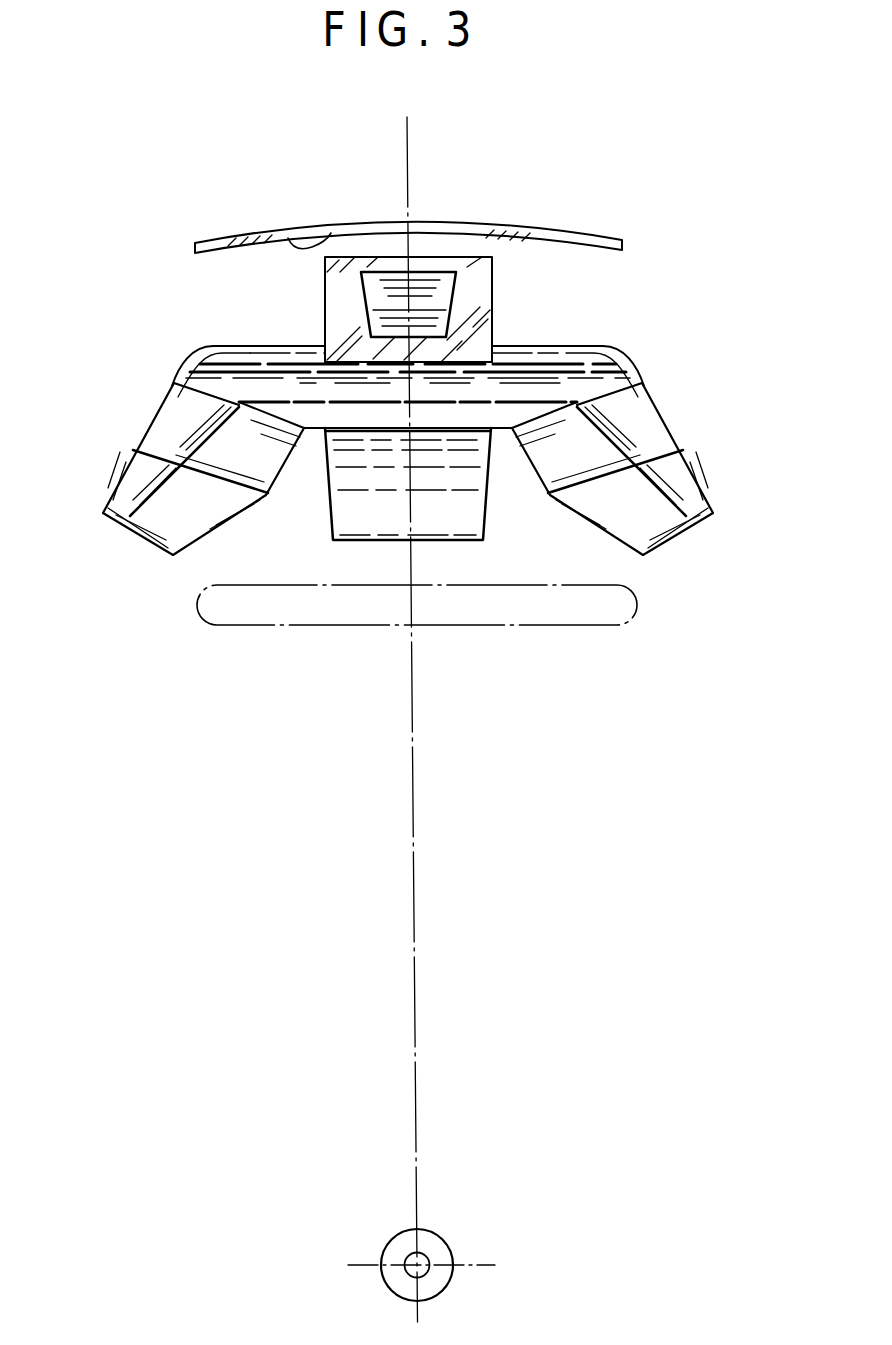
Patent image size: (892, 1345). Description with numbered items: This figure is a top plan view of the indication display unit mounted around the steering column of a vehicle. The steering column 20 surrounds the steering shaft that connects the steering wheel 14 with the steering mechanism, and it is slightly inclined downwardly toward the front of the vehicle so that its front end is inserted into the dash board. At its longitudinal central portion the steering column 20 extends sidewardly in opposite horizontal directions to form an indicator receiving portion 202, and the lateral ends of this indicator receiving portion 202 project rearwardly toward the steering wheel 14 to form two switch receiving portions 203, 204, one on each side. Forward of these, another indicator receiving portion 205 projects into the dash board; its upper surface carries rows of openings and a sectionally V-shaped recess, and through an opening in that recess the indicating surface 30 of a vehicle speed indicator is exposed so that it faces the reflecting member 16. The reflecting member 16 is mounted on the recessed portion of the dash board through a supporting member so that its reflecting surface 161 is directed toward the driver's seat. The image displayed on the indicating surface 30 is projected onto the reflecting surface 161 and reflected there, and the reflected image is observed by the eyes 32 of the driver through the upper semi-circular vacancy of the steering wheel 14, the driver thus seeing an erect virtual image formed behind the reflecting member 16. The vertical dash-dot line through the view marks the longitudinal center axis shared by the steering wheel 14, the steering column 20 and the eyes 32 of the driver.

The steering wheel 14 is at (268, 620).
The reflecting member 16 is at (246, 236).
The reflecting surface 161 is at (313, 229).
The steering column 20 is at (323, 487).
The indicating surface of vehicle speed indicator 30 is at (340, 323).
The eyes of the driver 32 is at (393, 1249).
The indicator receiving portion 202 is at (478, 390).
The switch receiving portion 203 is at (133, 468).
The switch receiving portion 204 is at (656, 522).
The indicator receiving portion 205 is at (473, 297).